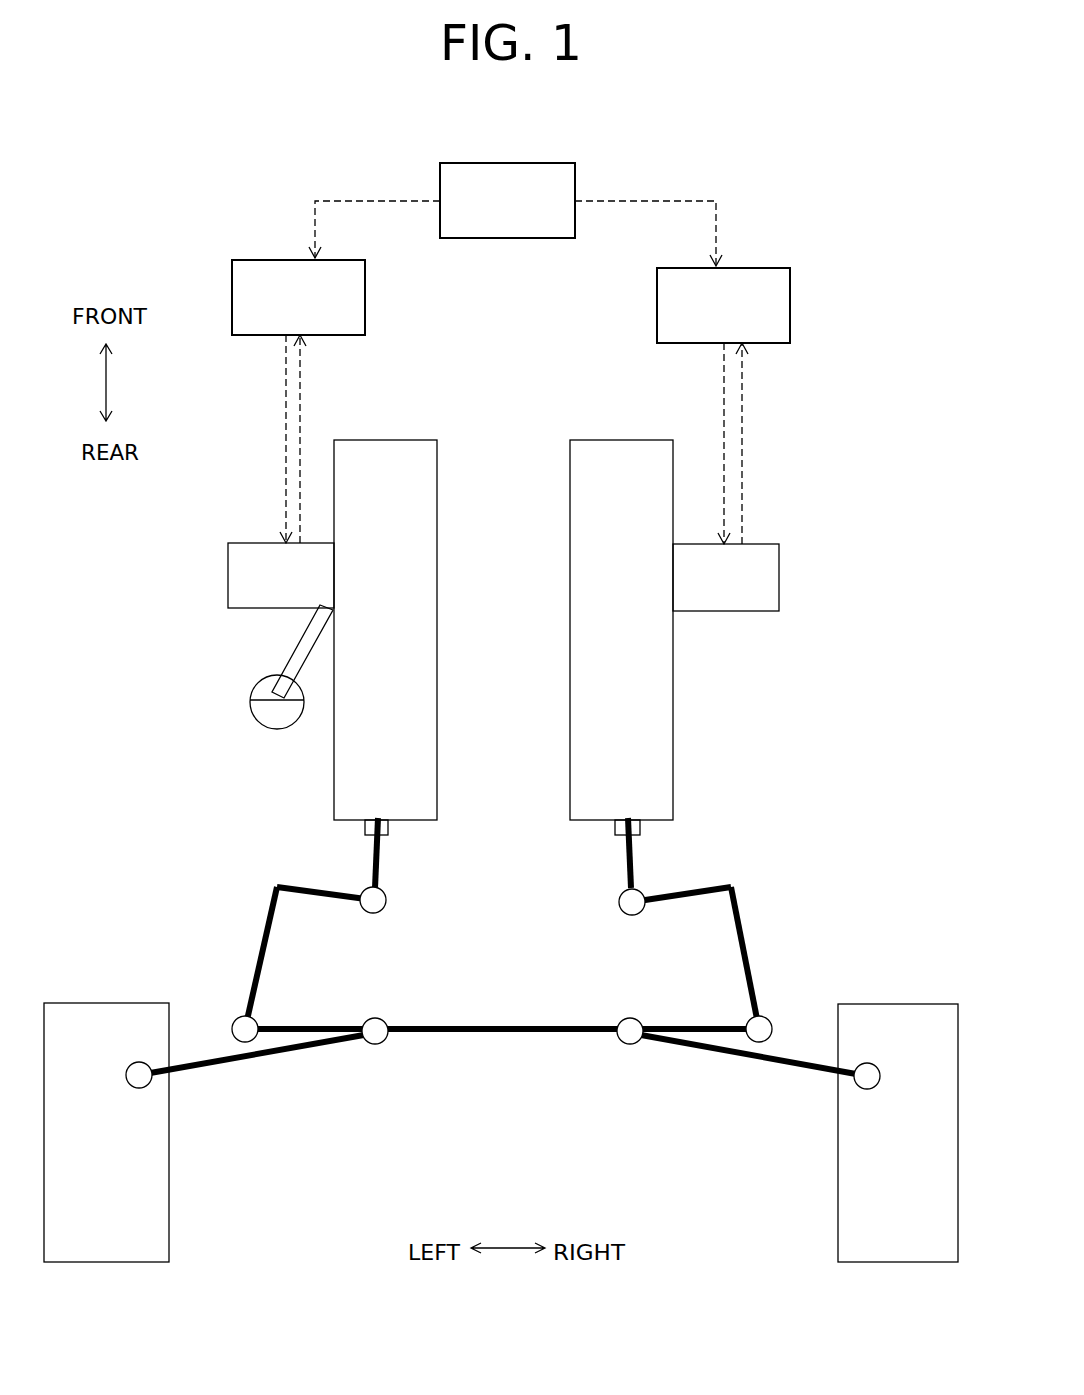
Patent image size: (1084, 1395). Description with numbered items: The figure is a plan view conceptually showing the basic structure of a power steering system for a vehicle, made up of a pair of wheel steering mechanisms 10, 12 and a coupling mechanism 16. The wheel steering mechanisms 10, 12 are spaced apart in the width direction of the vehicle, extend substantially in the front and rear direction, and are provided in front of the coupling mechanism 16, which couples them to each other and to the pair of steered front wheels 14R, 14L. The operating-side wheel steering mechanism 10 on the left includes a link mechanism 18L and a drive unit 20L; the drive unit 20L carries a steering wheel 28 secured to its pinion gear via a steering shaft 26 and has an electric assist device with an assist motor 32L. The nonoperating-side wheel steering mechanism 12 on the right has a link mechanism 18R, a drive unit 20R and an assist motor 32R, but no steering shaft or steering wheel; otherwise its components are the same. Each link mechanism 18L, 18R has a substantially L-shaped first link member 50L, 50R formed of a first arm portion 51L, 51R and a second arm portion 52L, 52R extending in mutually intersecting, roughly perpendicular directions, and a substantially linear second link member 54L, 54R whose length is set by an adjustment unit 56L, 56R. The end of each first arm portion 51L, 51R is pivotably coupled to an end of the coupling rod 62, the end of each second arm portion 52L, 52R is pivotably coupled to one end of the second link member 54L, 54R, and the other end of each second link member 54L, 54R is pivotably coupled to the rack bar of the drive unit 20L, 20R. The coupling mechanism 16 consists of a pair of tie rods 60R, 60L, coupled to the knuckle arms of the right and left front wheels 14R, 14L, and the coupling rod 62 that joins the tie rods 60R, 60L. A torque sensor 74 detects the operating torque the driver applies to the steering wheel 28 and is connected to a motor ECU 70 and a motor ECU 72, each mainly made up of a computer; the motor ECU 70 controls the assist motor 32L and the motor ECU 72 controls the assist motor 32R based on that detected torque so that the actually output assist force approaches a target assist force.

The operating-side wheel steering mechanism 10 is at (243, 818).
The nonoperating-side wheel steering mechanism 12 is at (788, 785).
The left front wheel 14L is at (142, 1015).
The right front wheel 14R is at (870, 1015).
The coupling mechanism 16 is at (562, 1093).
The link mechanism 18L is at (176, 902).
The link mechanism 18R is at (836, 905).
The drive unit 20L is at (397, 418).
The drive unit 20R is at (632, 420).
The steering shaft 26 is at (300, 658).
The steering wheel 28 is at (250, 720).
The assist motor 32L is at (240, 560).
The assist motor 32R is at (767, 564).
The first link member 50L is at (290, 934).
The first link member 50R is at (718, 948).
The first arm portion 51L is at (255, 962).
The first arm portion 51R is at (754, 972).
The second arm portion 52L is at (287, 885).
The second arm portion 52R is at (708, 885).
The second link member 54L is at (379, 864).
The second link member 54R is at (624, 870).
The adjustment unit 56L is at (390, 828).
The adjustment unit 56R is at (640, 829).
The tie rod 60L is at (318, 1050).
The tie rod 60R is at (722, 1050).
The coupling rod 62 is at (485, 1034).
The motor ECU 70 is at (343, 260).
The motor ECU 72 is at (765, 268).
The torque sensor 74 is at (553, 163).